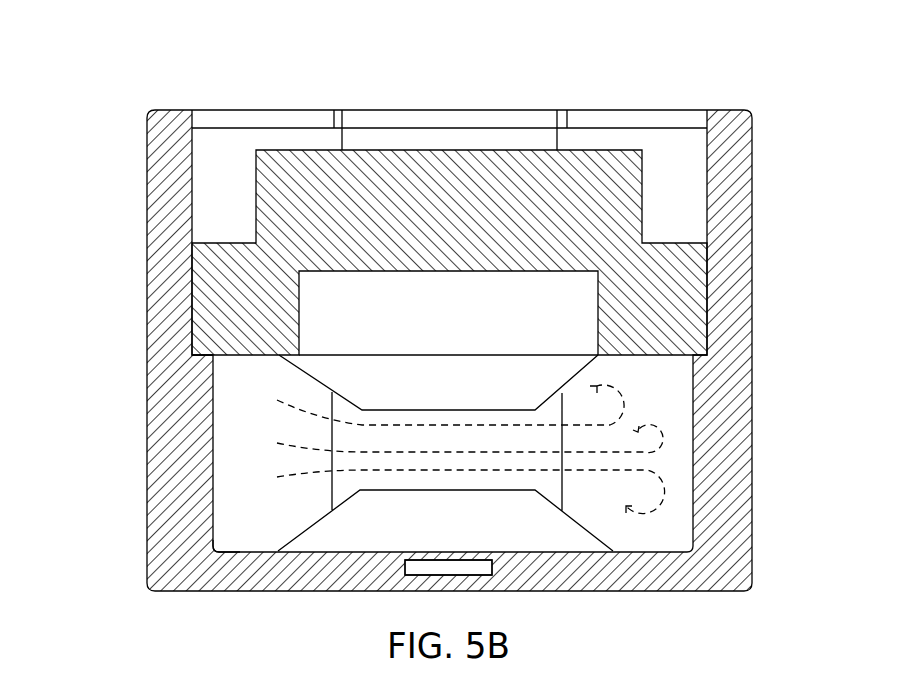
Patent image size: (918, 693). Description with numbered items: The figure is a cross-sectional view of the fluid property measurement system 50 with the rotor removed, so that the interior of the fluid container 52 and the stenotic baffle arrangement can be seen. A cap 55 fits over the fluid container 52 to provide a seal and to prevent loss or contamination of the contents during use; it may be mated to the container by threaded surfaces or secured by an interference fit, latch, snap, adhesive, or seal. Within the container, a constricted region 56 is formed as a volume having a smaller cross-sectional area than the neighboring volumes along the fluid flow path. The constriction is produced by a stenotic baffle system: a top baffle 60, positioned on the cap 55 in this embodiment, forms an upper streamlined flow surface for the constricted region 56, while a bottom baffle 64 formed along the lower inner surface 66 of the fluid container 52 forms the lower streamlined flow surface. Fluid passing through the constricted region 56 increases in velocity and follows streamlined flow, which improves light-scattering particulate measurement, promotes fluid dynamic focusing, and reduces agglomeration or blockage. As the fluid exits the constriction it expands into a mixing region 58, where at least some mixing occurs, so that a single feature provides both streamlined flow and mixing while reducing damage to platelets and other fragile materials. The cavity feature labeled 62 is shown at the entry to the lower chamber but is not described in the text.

The fluid property measurement system 50 is at (157, 92).
The fluid container 52 is at (147, 186).
The cap 55 is at (235, 289).
The constricted region 56 is at (373, 469).
The mixing region 58 is at (647, 462).
The top baffle 60 is at (590, 378).
The inlet opening 62 is at (232, 357).
The bottom baffle 64 is at (595, 537).
The lower inner surface 66 is at (255, 550).